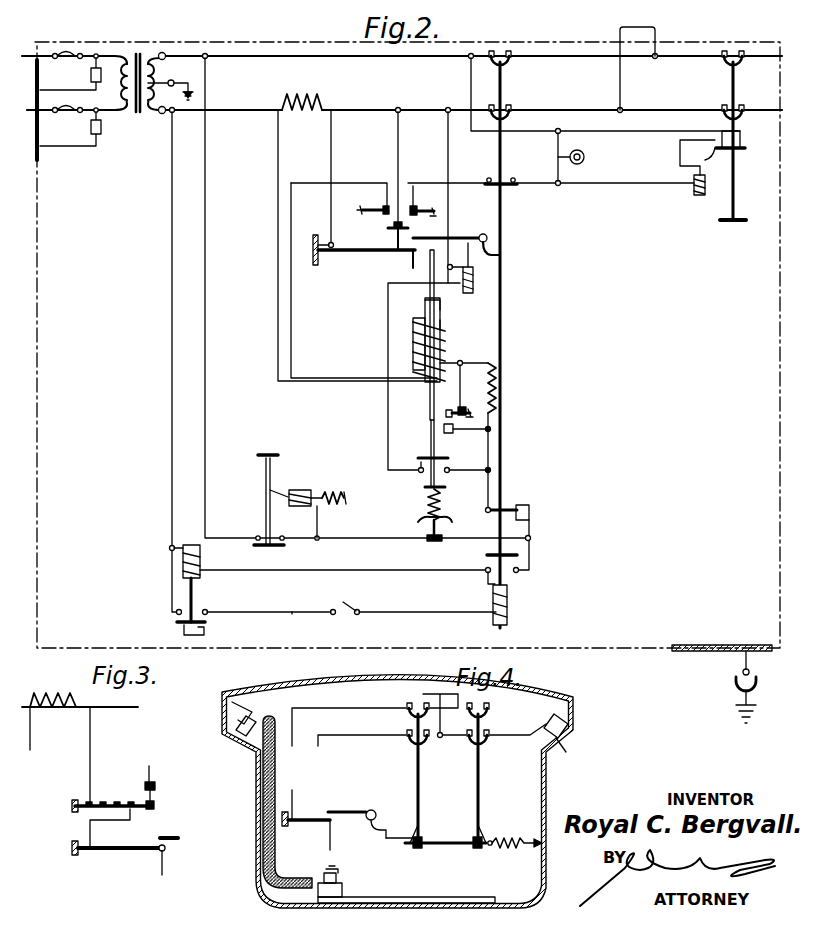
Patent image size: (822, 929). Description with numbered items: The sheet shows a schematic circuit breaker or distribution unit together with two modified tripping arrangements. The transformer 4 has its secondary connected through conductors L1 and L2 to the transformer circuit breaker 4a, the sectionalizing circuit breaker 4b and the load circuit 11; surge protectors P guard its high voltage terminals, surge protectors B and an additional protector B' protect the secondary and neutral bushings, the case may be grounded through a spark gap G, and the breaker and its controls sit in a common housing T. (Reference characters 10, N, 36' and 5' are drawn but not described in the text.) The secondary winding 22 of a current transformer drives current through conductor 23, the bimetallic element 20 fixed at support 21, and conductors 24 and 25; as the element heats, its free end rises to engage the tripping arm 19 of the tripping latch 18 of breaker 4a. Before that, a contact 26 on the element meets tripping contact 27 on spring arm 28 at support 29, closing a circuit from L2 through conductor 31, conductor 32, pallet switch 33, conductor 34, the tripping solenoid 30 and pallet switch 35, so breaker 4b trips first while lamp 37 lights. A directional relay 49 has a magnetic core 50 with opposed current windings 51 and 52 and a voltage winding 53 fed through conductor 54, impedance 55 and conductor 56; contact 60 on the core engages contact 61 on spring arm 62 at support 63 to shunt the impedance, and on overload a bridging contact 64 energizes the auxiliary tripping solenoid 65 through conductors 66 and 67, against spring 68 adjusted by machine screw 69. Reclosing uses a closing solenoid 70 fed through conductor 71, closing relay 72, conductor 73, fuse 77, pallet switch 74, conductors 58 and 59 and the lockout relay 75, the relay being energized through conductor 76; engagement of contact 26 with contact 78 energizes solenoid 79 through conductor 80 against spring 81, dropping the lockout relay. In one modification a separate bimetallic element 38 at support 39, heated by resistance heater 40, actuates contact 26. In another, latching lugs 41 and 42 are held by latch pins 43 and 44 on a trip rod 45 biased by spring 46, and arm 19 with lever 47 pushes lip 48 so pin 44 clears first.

In FIG. 2, the tank or housing T is at (72, 523).
In FIG. 4, the tank or housing T is at (252, 797).
In FIG. 2, the conductor L1 is at (290, 55).
In FIG. 4, the conductor L1 is at (294, 750).
In FIG. 2, the conductor L2 is at (248, 112).
In FIG. 3, the conductor L2 is at (26, 706).
In FIG. 4, the conductor L2 is at (322, 750).
In FIG. 2, the plug contacts 10 is at (66, 95).
In FIG. 2, the surge protectors P is at (103, 78).
In FIG. 2, the transformer 4 is at (137, 60).
In FIG. 4, the transformer 4 is at (318, 896).
In FIG. 2, the surge protectors B is at (165, 79).
In FIG. 4, the surge protectors B is at (545, 733).
In FIG. 2, the additional protector B' is at (167, 72).
In FIG. 2, the neutral ground N is at (187, 80).
In FIG. 2, the load circuit 11 is at (622, 32).
In FIG. 4, the load circuit 11 is at (430, 694).
In FIG. 2, the conductor 71 is at (170, 352).
In FIG. 2, the conductor 59 is at (209, 432).
In FIG. 2, the secondary winding 22 is at (314, 104).
In FIG. 3, the secondary winding 22 is at (70, 704).
In FIG. 2, the conductor 23 is at (333, 137).
In FIG. 3, the conductor 23 is at (92, 746).
In FIG. 4, the conductor 23 is at (298, 796).
In FIG. 2, the conductor 80 is at (290, 332).
In FIG. 2, the conductor 25 is at (349, 380).
In FIG. 3, the conductor 25 is at (32, 746).
In FIG. 2, the conductor 31 is at (400, 152).
In FIG. 2, the contact 26 is at (387, 235).
In FIG. 3, the contact 26 is at (156, 806).
In FIG. 2, the conductor 54 is at (447, 153).
In FIG. 2, the conductor 32 is at (462, 182).
In FIG. 3, the conductor 32 is at (152, 770).
In FIG. 2, the contact 78 is at (378, 208).
In FIG. 2, the tripping contact 27 is at (415, 190).
In FIG. 3, the tripping contact 27 is at (158, 787).
In FIG. 2, the resilient spring arm 28 is at (420, 208).
In FIG. 2, the fixed support 29 is at (437, 212).
In FIG. 2, the pallet switch 33 is at (518, 187).
In FIG. 2, the conductor 34 is at (604, 183).
In FIG. 2, the conductor 36' is at (605, 118).
In FIG. 2, the lamp 37 is at (584, 161).
In FIG. 2, the tripping solenoid 30 is at (692, 192).
In FIG. 2, the pallet switch 35 is at (742, 152).
In FIG. 2, the sectionalizing circuit breaker 4b is at (737, 207).
In FIG. 4, the sectionalizing circuit breaker 4b is at (482, 792).
In FIG. 2, the transformer circuit breaker 4a is at (504, 280).
In FIG. 4, the transformer circuit breaker 4a is at (446, 782).
In FIG. 2, the fixed support 21 is at (317, 267).
In FIG. 2, the bimetallic element 20 is at (354, 252).
In FIG. 3, the bimetallic element 20 is at (114, 855).
In FIG. 4, the bimetallic element 20 is at (312, 826).
In FIG. 2, the conductor 24 is at (411, 268).
In FIG. 3, the conductor 24 is at (158, 876).
In FIG. 4, the conductor 24 is at (328, 852).
In FIG. 2, the tripping arm 19 is at (452, 236).
In FIG. 3, the tripping arm 19 is at (180, 840).
In FIG. 4, the tripping arm 19 is at (346, 810).
In FIG. 2, the tripping latch 18 is at (506, 246).
In FIG. 2, the auxiliary tripping solenoid 65 is at (476, 290).
In FIG. 2, the conductor 66 is at (387, 433).
In FIG. 2, the current winding 52 is at (412, 385).
In FIG. 2, the magnetic core 50 is at (443, 338).
In FIG. 2, the voltage winding 53 is at (428, 335).
In FIG. 2, the current winding 51 is at (424, 302).
In FIG. 2, the directional relay 49 is at (462, 343).
In FIG. 2, the impedance 55 is at (496, 396).
In FIG. 2, the conductor 56 is at (494, 440).
In FIG. 2, the contact 61 is at (458, 388).
In FIG. 2, the resilient spring arm 62 is at (472, 404).
In FIG. 2, the fixed support 63 is at (476, 413).
In FIG. 2, the contact 60 is at (465, 428).
In FIG. 2, the conductor 67 is at (500, 475).
In FIG. 2, the bridging contact 64 is at (418, 450).
In FIG. 2, the spring 68 is at (424, 504).
In FIG. 2, the machine screw 69 is at (452, 524).
In FIG. 2, the contact block 5' is at (524, 513).
In FIG. 2, the conductor 58 is at (534, 526).
In FIG. 2, the pallet switch 74 is at (485, 566).
In FIG. 2, the conductor 76 is at (356, 570).
In FIG. 2, the closing solenoid 70 is at (512, 608).
In FIG. 2, the closing relay 72 is at (201, 603).
In FIG. 2, the fuse 77 is at (341, 609).
In FIG. 2, the conductor 73 is at (293, 614).
In FIG. 2, the lockout relay 75 is at (264, 516).
In FIG. 2, the solenoid 79 is at (298, 490).
In FIG. 2, the spring 81 is at (340, 492).
In FIG. 2, the spark gap G is at (742, 674).
In FIG. 3, the fixed support 39 is at (70, 810).
In FIG. 3, the resistance heater 40 is at (118, 799).
In FIG. 3, the bimetallic element 38 is at (152, 811).
In FIG. 4, the lever 47 is at (410, 828).
In FIG. 4, the lip 48 is at (384, 838).
In FIG. 4, the latching lug 41 is at (414, 830).
In FIG. 4, the latching lug 42 is at (474, 838).
In FIG. 4, the trip rod 45 is at (440, 850).
In FIG. 4, the latch pin 43 is at (412, 850).
In FIG. 4, the latch pin 44 is at (476, 850).
In FIG. 4, the spring 46 is at (508, 850).